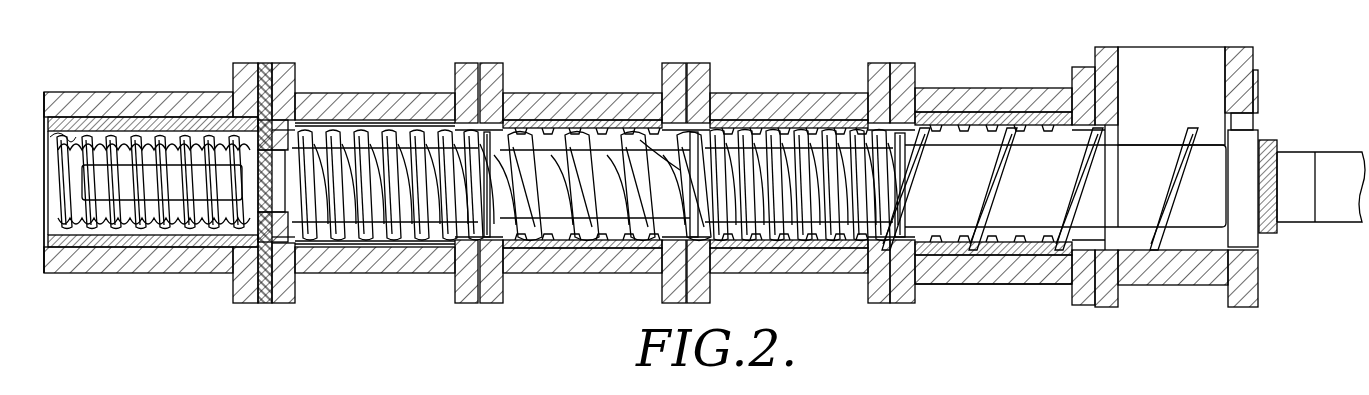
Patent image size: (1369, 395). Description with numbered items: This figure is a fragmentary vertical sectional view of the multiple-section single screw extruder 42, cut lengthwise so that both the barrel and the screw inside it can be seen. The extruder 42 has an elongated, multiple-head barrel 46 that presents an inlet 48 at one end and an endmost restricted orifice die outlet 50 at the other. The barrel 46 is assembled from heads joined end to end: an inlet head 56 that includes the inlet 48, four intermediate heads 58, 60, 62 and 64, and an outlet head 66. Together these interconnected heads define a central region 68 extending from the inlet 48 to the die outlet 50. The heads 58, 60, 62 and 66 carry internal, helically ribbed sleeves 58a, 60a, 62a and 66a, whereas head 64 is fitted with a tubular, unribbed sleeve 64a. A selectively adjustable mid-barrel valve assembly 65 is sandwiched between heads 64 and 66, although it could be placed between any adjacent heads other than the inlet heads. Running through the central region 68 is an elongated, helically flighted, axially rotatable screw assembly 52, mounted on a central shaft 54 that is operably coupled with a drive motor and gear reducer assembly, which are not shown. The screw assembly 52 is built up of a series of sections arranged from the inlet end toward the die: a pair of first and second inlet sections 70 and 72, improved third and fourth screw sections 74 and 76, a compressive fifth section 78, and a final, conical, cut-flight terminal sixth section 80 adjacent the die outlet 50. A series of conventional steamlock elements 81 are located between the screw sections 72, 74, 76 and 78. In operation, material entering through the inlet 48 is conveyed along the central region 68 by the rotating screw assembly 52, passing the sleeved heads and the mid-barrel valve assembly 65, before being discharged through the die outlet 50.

The single screw extruder 42 is at (233, 332).
The barrel 46 is at (935, 278).
The inlet 48 is at (1195, 58).
The die outlet 50 is at (43, 215).
The screw assembly 52 is at (598, 138).
The central shaft 54 is at (1297, 162).
The inlet head 56 is at (1168, 276).
The intermediate head 58 is at (1000, 90).
The helically ribbed sleeve 58a is at (933, 128).
The intermediate head 60 is at (830, 100).
The helically ribbed sleeve 60a is at (745, 126).
The intermediate head 62 is at (555, 100).
The helically ribbed sleeve 62a is at (521, 128).
The intermediate head 64 is at (410, 100).
The tubular unribbed sleeve 64a is at (365, 248).
The mid-barrel valve assembly 65 is at (265, 65).
The outlet head 66 is at (100, 101).
The helically ribbed sleeve 66a is at (165, 126).
The central region 68 is at (655, 140).
The first inlet section 70 is at (1145, 145).
The second inlet section 72 is at (1048, 155).
The third screw section 74 is at (822, 246).
The fourth screw section 76 is at (548, 216).
The compressive fifth section 78 is at (340, 133).
The terminal sixth section 80 is at (190, 222).
The steamlock elements 81 is at (905, 165).